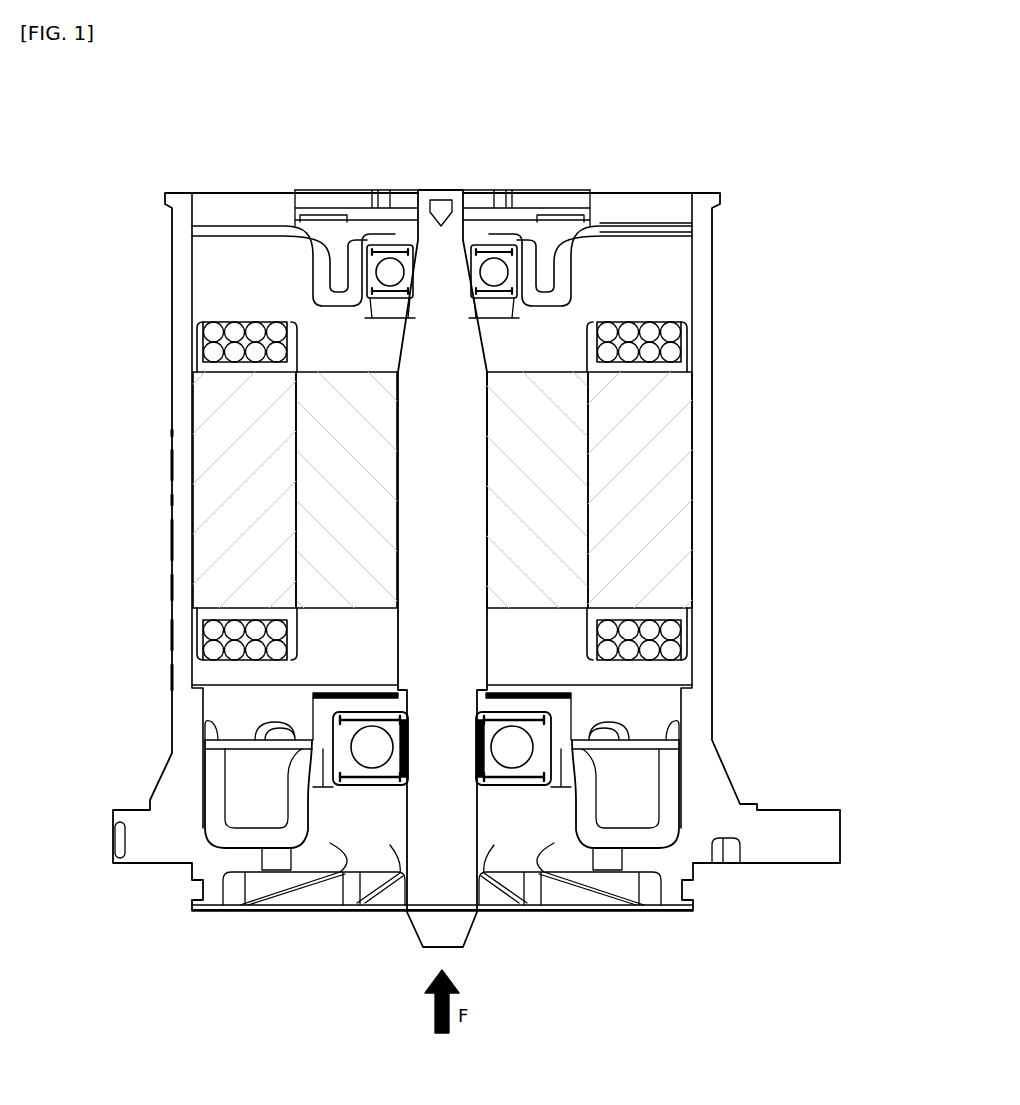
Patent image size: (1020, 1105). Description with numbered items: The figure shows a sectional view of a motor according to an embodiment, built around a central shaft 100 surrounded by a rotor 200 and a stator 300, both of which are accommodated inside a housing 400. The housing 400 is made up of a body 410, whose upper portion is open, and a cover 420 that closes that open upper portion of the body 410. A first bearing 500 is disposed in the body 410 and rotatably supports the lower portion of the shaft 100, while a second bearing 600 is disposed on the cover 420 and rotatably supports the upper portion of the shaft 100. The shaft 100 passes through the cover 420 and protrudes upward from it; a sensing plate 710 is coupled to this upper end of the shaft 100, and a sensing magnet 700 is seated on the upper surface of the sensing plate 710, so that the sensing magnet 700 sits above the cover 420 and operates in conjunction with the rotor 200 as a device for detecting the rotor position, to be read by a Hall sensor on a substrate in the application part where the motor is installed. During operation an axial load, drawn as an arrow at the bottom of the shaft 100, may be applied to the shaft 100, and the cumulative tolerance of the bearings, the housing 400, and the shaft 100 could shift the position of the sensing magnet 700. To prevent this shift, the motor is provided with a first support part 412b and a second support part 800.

The shaft 100 is at (445, 567).
The rotor 200 is at (545, 500).
The stator 300 is at (665, 452).
The housing 400 is at (718, 363).
The body 410 is at (706, 243).
The first support part 412b is at (322, 694).
The cover 420 is at (663, 232).
The first bearing 500 is at (546, 739).
The second bearing 600 is at (520, 268).
The sensing magnet 700 is at (534, 195).
The sensing plate 710 is at (556, 224).
The second support part 800 is at (402, 250).